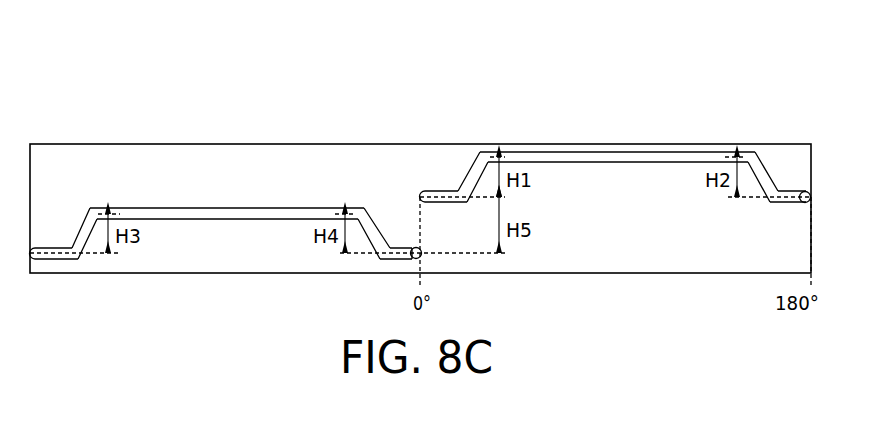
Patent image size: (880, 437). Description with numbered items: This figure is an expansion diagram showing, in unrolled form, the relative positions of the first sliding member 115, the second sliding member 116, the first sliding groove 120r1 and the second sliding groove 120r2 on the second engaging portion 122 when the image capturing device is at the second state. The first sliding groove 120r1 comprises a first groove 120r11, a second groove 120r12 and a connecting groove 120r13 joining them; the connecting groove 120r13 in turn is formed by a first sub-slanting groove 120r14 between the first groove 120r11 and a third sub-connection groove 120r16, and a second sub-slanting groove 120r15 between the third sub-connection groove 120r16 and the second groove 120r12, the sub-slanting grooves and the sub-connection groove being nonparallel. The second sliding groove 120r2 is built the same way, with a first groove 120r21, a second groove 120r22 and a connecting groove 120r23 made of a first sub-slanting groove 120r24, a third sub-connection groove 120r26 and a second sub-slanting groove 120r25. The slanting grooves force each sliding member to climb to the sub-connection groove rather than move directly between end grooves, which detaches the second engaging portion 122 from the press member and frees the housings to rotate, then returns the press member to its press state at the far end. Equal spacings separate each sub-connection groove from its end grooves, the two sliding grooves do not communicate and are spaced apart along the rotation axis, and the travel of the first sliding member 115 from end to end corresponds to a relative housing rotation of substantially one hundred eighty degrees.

The first sliding groove 120r1 is at (813, 71).
The first groove 120r11 is at (447, 191).
The second groove 120r12 is at (783, 191).
The connecting groove 120r13 is at (740, 107).
The first sub-slanting groove 120r14 is at (476, 171).
The second sub-slanting groove 120r15 is at (763, 175).
The third sub-connection groove 120r16 is at (633, 152).
The second sliding groove 120r2 is at (415, 71).
The first groove 120r21 is at (55, 247).
The second groove 120r22 is at (402, 248).
The connecting groove 120r23 is at (343, 107).
The first sub-slanting groove 120r24 is at (85, 233).
The second sub-slanting groove 120r25 is at (372, 228).
The third sub-connection groove 120r26 is at (235, 215).
The second sliding member 116 is at (414, 259).
The first sliding member 115 is at (804, 203).
The second engaging portion 122 is at (613, 255).